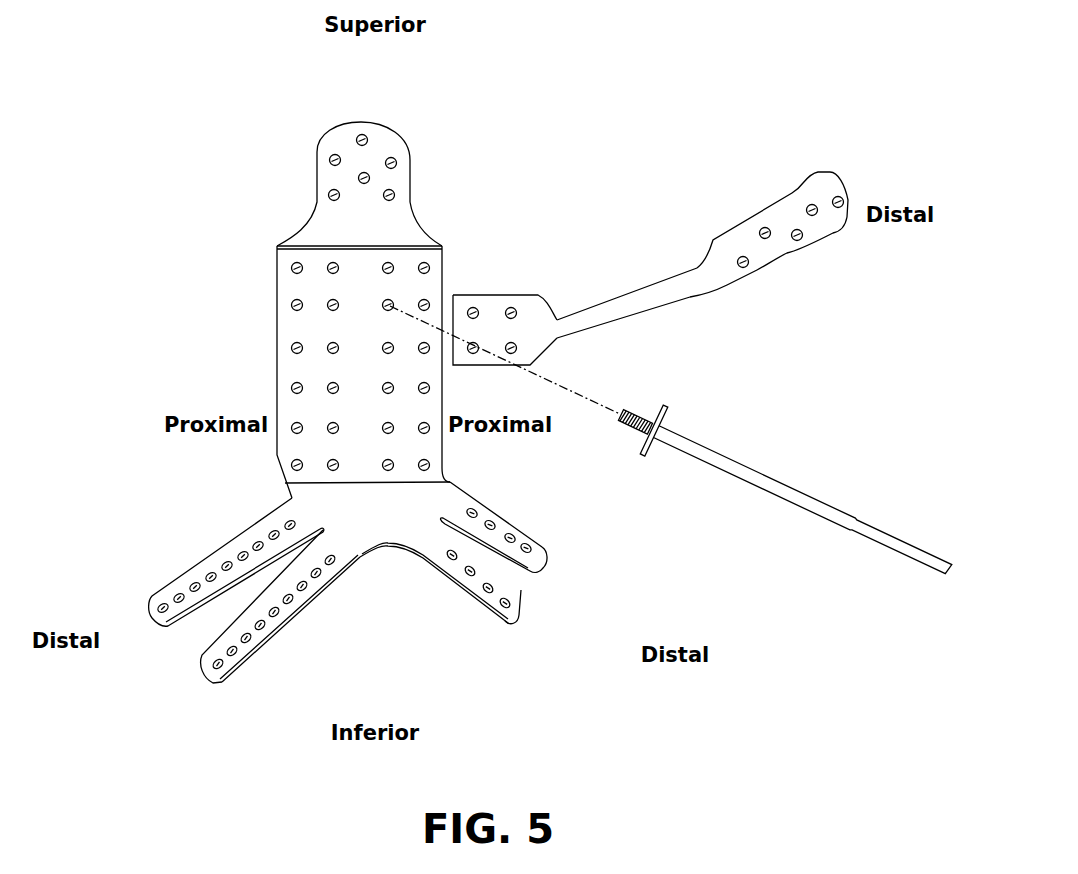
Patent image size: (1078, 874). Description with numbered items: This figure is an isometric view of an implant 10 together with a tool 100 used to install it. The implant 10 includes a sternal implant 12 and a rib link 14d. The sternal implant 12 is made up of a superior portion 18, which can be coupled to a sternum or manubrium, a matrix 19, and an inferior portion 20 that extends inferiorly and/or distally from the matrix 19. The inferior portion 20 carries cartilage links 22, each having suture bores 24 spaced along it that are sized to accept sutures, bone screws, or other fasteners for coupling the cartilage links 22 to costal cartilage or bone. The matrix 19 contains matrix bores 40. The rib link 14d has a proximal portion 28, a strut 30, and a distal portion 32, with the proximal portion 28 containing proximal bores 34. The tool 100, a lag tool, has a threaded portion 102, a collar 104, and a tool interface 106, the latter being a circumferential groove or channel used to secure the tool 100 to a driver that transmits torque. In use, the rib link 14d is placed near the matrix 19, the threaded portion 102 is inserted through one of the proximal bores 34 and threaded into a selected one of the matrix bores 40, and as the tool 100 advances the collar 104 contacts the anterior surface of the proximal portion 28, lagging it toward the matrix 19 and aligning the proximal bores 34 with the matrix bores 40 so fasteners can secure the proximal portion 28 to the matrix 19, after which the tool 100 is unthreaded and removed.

The implant 10 is at (140, 87).
The sternal implant 12 is at (196, 221).
The rib link 14d is at (665, 243).
The superior portion 18 is at (285, 170).
The matrix 19 is at (237, 358).
The inferior portion 20 is at (404, 622).
The cartilage links 22 is at (207, 680).
The suture bores 24 is at (526, 543).
The proximal portion 28 is at (538, 348).
The strut 30 is at (728, 277).
The distal portion 32 is at (741, 232).
The proximal bores 34 is at (512, 342).
The matrix bores 40 is at (426, 298).
The tool 100 is at (752, 530).
The threaded portion 102 is at (628, 428).
The collar 104 is at (648, 455).
The tool interface 106 is at (857, 530).